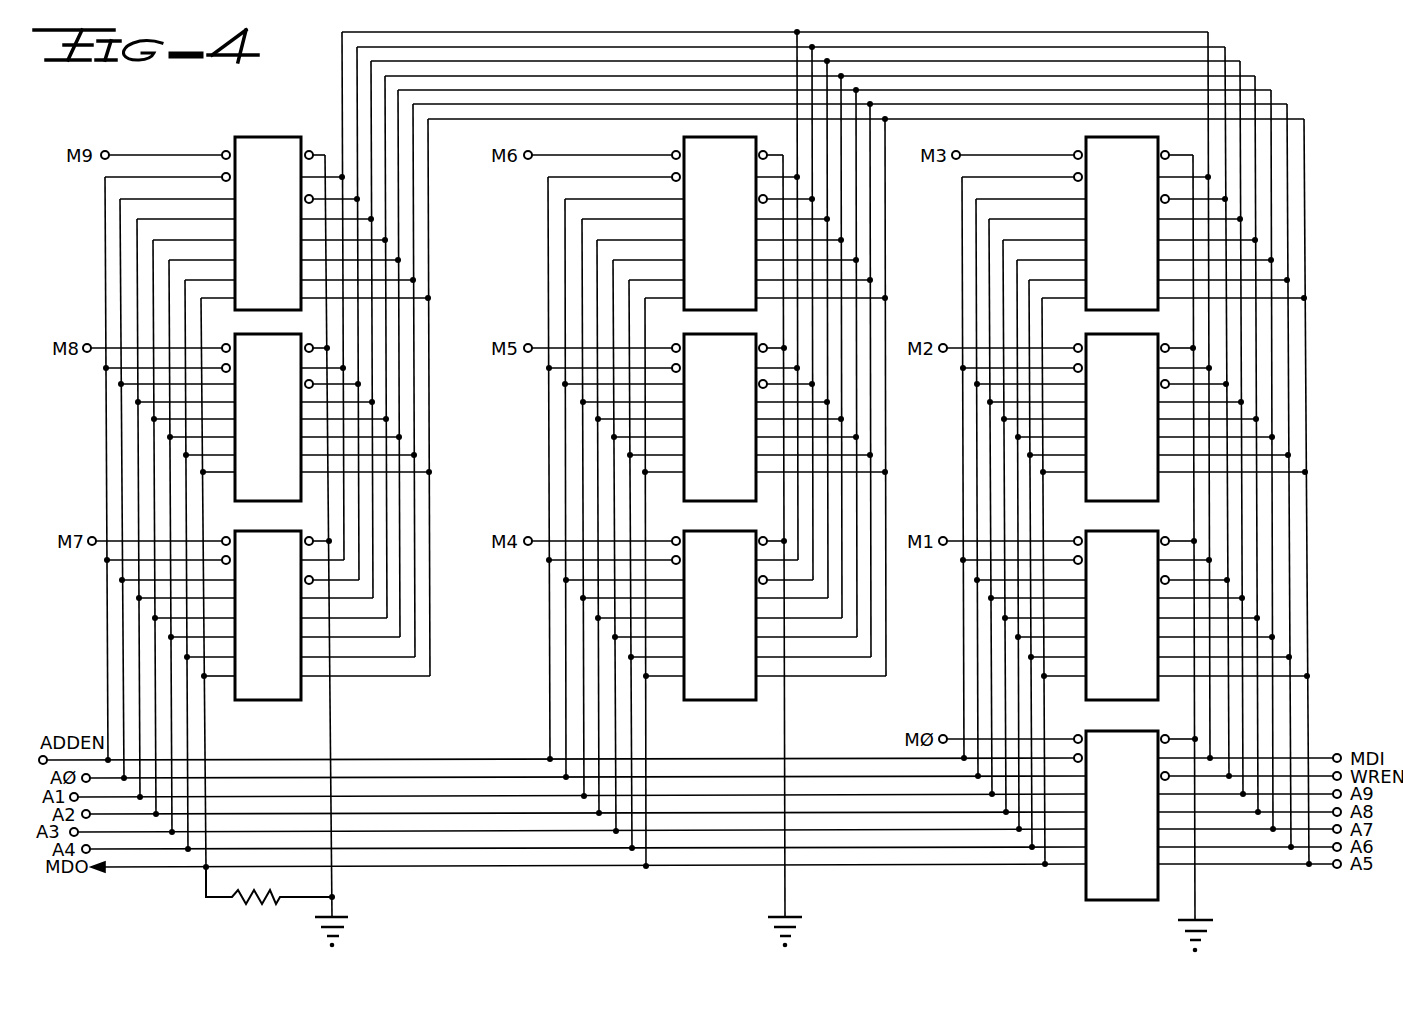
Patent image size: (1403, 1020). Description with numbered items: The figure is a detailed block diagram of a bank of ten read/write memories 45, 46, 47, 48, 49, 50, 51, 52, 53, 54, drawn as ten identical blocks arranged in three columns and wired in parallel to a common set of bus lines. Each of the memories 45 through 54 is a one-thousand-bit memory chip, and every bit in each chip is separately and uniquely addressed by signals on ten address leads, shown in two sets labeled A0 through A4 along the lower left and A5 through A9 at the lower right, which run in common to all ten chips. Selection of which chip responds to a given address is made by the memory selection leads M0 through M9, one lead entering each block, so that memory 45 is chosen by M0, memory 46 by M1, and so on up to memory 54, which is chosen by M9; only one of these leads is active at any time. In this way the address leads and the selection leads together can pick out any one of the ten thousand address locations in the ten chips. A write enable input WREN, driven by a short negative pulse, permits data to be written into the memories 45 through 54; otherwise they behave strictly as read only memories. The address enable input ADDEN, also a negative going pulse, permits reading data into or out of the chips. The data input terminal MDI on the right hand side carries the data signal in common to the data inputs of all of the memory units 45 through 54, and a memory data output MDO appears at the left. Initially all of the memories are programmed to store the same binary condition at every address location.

The read/write memory 45 is at (1118, 901).
The read/write memory 46 is at (1118, 701).
The read/write memory 47 is at (1118, 502).
The read/write memory 48 is at (1118, 311).
The read/write memory 49 is at (715, 701).
The read/write memory 50 is at (715, 502).
The read/write memory 51 is at (715, 311).
The read/write memory 52 is at (263, 701).
The read/write memory 53 is at (263, 502).
The read/write memory 54 is at (263, 311).